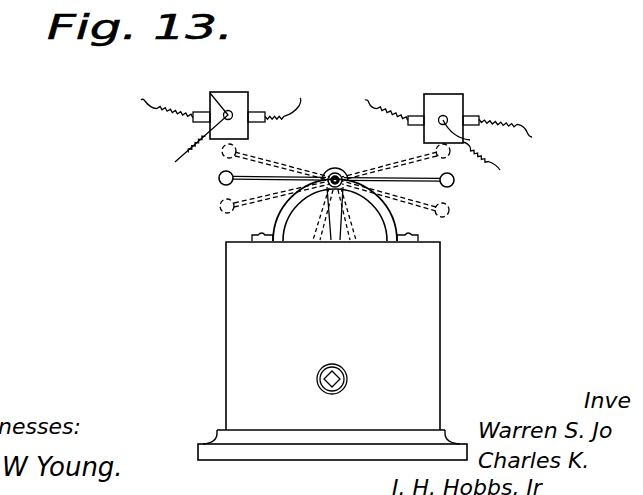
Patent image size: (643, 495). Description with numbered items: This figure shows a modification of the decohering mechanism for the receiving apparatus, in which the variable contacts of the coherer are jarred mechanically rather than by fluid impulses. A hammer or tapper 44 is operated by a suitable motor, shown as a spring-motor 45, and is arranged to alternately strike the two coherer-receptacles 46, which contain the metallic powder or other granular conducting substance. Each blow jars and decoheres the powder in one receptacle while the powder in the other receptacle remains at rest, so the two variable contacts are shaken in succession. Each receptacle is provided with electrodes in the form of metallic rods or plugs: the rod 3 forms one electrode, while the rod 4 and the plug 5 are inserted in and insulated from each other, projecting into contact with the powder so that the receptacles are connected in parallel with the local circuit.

The metallic rod 3 is at (262, 111).
The metallic rod 4 is at (197, 111).
The metallic plug 5 is at (210, 93).
The hammer or tapper 44 is at (336, 180).
The spring-motor 45 is at (332, 319).
The coherer-receptacles 46 is at (228, 92).